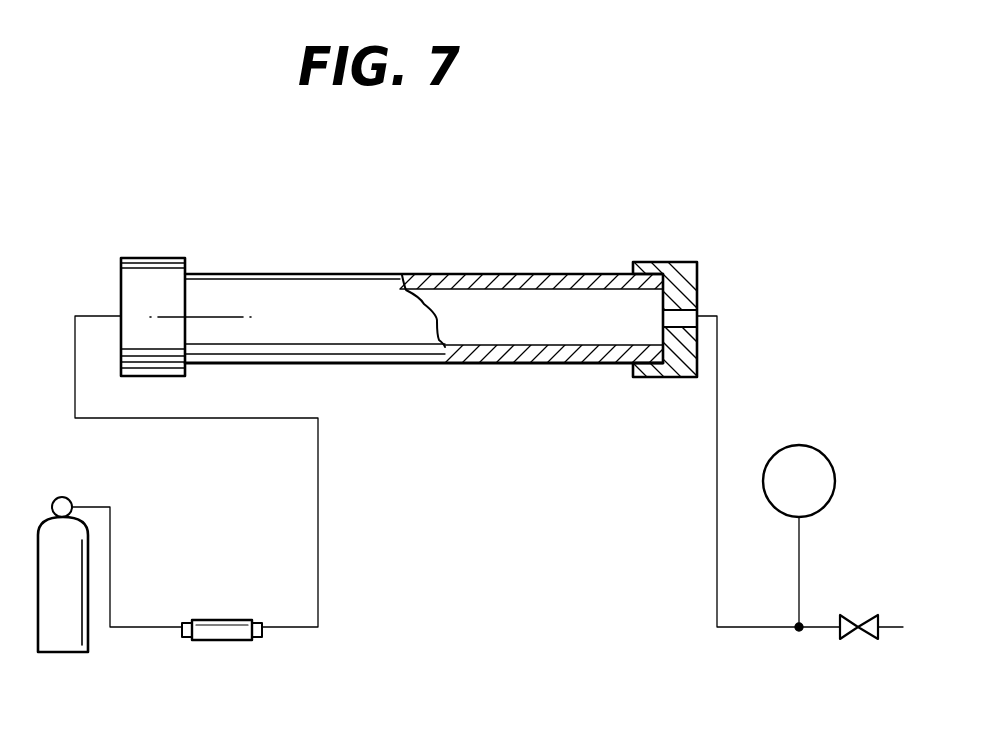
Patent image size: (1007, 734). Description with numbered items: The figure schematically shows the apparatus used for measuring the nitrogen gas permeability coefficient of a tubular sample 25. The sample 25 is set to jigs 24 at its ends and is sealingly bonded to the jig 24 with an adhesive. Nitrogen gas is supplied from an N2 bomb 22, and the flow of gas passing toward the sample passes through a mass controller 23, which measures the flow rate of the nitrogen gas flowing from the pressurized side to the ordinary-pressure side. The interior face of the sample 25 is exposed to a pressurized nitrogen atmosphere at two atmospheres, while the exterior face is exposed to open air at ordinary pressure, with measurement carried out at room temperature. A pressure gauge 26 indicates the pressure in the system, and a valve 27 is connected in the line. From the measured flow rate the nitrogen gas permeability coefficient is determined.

The N2 bomb 22 is at (67, 640).
The mass controller 23 is at (232, 640).
The jig 24 is at (150, 268).
The sample 25 is at (479, 273).
The pressure gauge 26 is at (799, 443).
The valve 27 is at (851, 615).